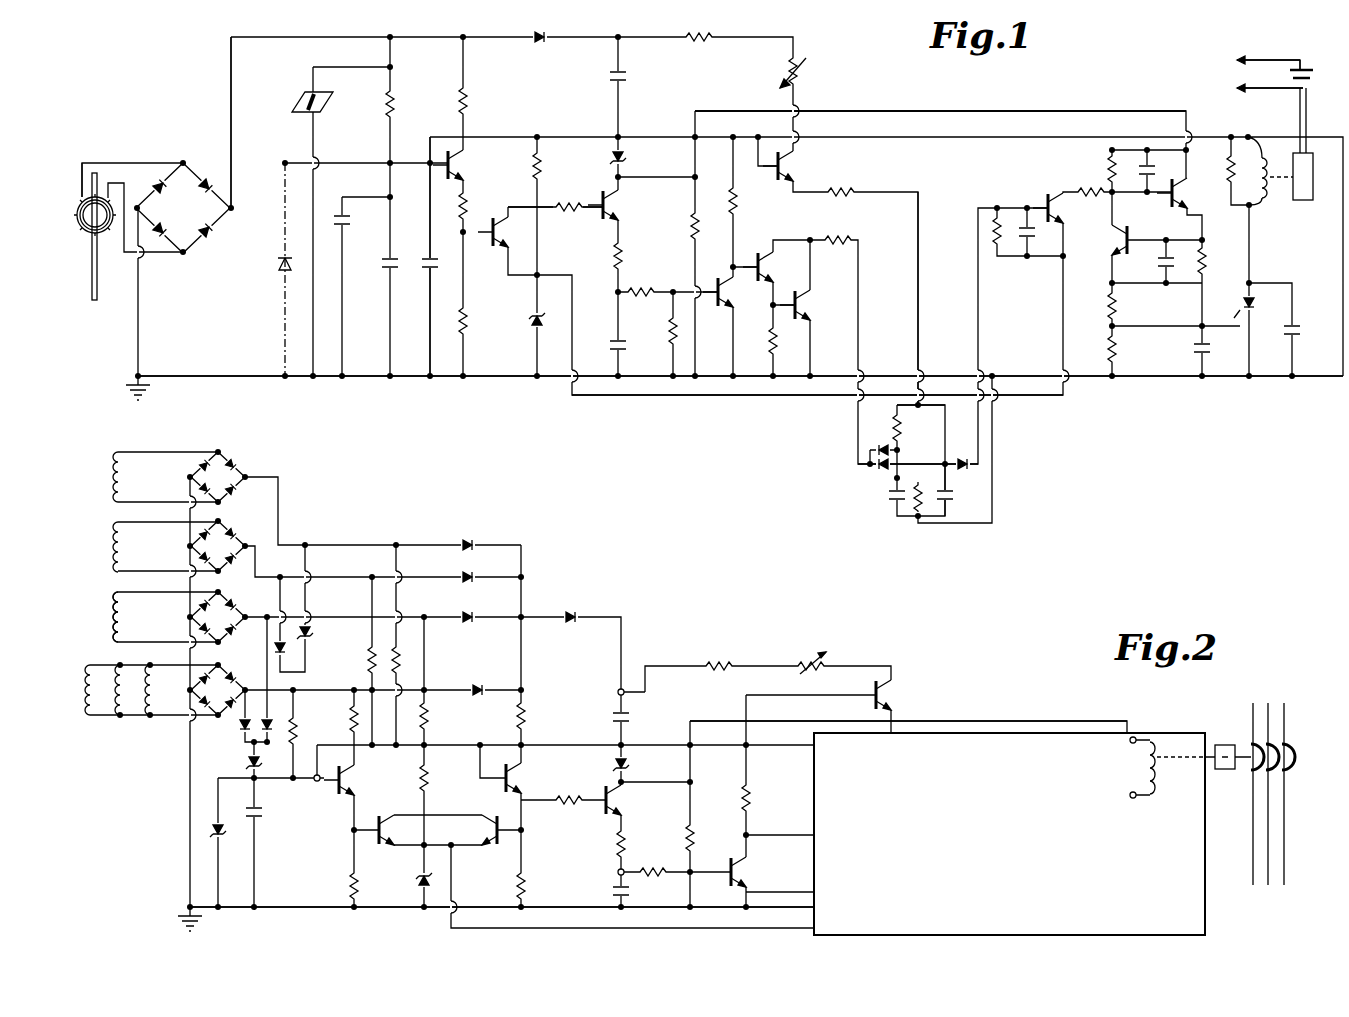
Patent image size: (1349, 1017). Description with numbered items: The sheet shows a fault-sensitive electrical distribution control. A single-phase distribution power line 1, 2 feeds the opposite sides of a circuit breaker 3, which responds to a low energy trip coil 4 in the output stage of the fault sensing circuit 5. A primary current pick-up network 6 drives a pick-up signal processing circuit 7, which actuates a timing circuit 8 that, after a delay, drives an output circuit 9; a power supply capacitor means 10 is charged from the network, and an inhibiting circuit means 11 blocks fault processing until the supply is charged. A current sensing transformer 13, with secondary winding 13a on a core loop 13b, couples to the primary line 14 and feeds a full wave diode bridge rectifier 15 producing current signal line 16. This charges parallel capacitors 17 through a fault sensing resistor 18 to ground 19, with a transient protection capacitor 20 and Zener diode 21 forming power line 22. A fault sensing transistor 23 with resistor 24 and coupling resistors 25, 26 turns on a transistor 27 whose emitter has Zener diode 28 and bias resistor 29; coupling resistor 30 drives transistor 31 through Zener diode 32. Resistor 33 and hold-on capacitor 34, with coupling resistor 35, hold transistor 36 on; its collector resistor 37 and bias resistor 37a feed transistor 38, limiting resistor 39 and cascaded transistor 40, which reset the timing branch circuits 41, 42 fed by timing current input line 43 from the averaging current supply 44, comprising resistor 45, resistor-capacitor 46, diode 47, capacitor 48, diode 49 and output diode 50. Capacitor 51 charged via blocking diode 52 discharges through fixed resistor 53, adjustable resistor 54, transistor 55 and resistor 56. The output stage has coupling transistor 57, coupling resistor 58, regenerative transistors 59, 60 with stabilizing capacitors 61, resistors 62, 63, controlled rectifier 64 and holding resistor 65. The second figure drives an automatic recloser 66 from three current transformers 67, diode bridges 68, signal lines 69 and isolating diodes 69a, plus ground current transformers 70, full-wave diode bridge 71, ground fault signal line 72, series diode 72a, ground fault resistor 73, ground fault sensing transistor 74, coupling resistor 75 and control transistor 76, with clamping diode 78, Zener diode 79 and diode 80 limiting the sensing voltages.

In FIG. 1, the distribution power line 1 is at (1272, 58).
In FIG. 1, the distribution power line 2 is at (1252, 88).
In FIG. 1, the circuit breaker 3 is at (1315, 68).
In FIG. 1, the trip coil 4 is at (1289, 198).
In FIG. 1, the fault sensing circuit 5 is at (1132, 102).
In FIG. 1, the primary current pick-up network 6 is at (165, 140).
In FIG. 1, the pick-up signal processing circuit 7 is at (700, 398).
In FIG. 1, the timing circuit 8 is at (844, 440).
In FIG. 1, the output circuit 9 is at (1154, 378).
In FIG. 1, the power supply capacitor means 10 is at (402, 392).
In FIG. 1, the inhibiting circuit means 11 is at (555, 185).
In FIG. 1, the current sensing transformer 13 is at (75, 192).
In FIG. 1, the secondary winding 13a is at (80, 218).
In FIG. 1, the core loop 13b is at (88, 233).
In FIG. 1, the primary line 14 is at (90, 290).
In FIG. 1, the full wave diode bridge rectifier 15 is at (183, 208).
In FIG. 1, the current signal line 16 is at (230, 106).
In FIG. 1, the capacitors 17 is at (418, 258).
In FIG. 2, the capacitors 17 is at (268, 812).
In FIG. 1, the fault sensing resistor 18 is at (398, 93).
In FIG. 2, the fault sensing resistor 18 is at (398, 700).
In FIG. 1, the ground 19 is at (212, 376).
In FIG. 2, the ground 19 is at (294, 908).
In FIG. 1, the transient protection capacitor 20 is at (350, 223).
In FIG. 1, the Zener diode 21 is at (280, 272).
In FIG. 1, the power line 22 is at (418, 162).
In FIG. 2, the power line 22 is at (385, 746).
In FIG. 1, the fault sensing transistor 23 is at (460, 165).
In FIG. 2, the fault sensing transistor 23 is at (525, 778).
In FIG. 1, the resistor 24 is at (470, 94).
In FIG. 2, the resistor 24 is at (516, 716).
In FIG. 1, the coupling resistor 25 is at (468, 196).
In FIG. 1, the coupling resistor 26 is at (468, 326).
In FIG. 2, the coupling resistor 26 is at (526, 882).
In FIG. 1, the transistor 27 is at (497, 258).
In FIG. 2, the transistor 27 is at (496, 848).
In FIG. 1, the Zener diode 28 is at (540, 328).
In FIG. 2, the Zener diode 28 is at (416, 886).
In FIG. 1, the bias resistor 29 is at (544, 170).
In FIG. 1, the coupling resistor 30 is at (565, 212).
In FIG. 2, the coupling resistor 30 is at (566, 802).
In FIG. 1, the transistor 31 is at (600, 225).
In FIG. 2, the transistor 31 is at (628, 796).
In FIG. 1, the Zener diode 32 is at (626, 156).
In FIG. 2, the Zener diode 32 is at (632, 763).
In FIG. 1, the resistor 33 is at (624, 256).
In FIG. 1, the hold-on capacitor 34 is at (608, 343).
In FIG. 2, the hold-on capacitor 34 is at (632, 892).
In FIG. 1, the coupling resistor 35 is at (644, 290).
In FIG. 1, the transistor 36 is at (724, 312).
In FIG. 2, the transistor 36 is at (748, 864).
In FIG. 1, the resistor 37 is at (738, 198).
In FIG. 1, the bias resistor 37a is at (670, 333).
In FIG. 1, the transistor 38 is at (760, 288).
In FIG. 1, the limiting resistor 39 is at (850, 240).
In FIG. 1, the cascaded transistor 40 is at (802, 326).
In FIG. 1, the branch circuit 41 is at (894, 482).
In FIG. 1, the branch circuit 42 is at (948, 474).
In FIG. 1, the timing current input line 43 is at (918, 405).
In FIG. 1, the averaging current supply 44 is at (935, 89).
In FIG. 2, the averaging current supply 44 is at (908, 703).
In FIG. 1, the resistor 45 is at (900, 432).
In FIG. 1, the paralleled resistor-capacitor 46 is at (928, 492).
In FIG. 1, the diode 47 is at (882, 446).
In FIG. 1, the capacitor 48 is at (948, 496).
In FIG. 1, the diode 49 is at (880, 466).
In FIG. 1, the output diode 50 is at (962, 460).
In FIG. 1, the capacitor 51 is at (608, 76).
In FIG. 2, the capacitor 51 is at (632, 716).
In FIG. 1, the blocking diode 52 is at (540, 45).
In FIG. 2, the blocking diode 52 is at (570, 610).
In FIG. 1, the fixed resistor 53 is at (710, 40).
In FIG. 2, the fixed resistor 53 is at (722, 664).
In FIG. 1, the adjustable resistor 54 is at (803, 62).
In FIG. 2, the adjustable resistor 54 is at (818, 648).
In FIG. 1, the transistor 55 is at (790, 165).
In FIG. 2, the transistor 55 is at (892, 688).
In FIG. 1, the resistor 56 is at (844, 192).
In FIG. 1, the coupling transistor 57 is at (1050, 195).
In FIG. 1, the coupling resistor 58 is at (1086, 186).
In FIG. 1, the transistor 59 is at (1180, 188).
In FIG. 1, the transistor 60 is at (1116, 242).
In FIG. 1, the stabilizing capacitors 61 is at (1152, 174).
In FIG. 1, the resistor 62 is at (1106, 303).
In FIG. 1, the resistor 63 is at (1118, 352).
In FIG. 1, the controlled rectifier 64 is at (1242, 302).
In FIG. 1, the holding resistor 65 is at (1220, 174).
In FIG. 2, the automatic recloser 66 is at (1300, 750).
In FIG. 2, the current transformers 67 is at (112, 617).
In FIG. 2, the diode bridge 68 is at (265, 502).
In FIG. 2, the signal lines 69 is at (354, 580).
In FIG. 2, the isolating diodes 69a is at (462, 614).
In FIG. 2, the current transformers 70 is at (80, 690).
In FIG. 2, the full-wave diode bridge 71 is at (202, 717).
In FIG. 2, the ground fault signal line 72 is at (354, 690).
In FIG. 2, the series diode 72a is at (480, 686).
In FIG. 2, the ground fault resistor 73 is at (298, 728).
In FIG. 2, the ground fault sensing transistor 74 is at (350, 778).
In FIG. 2, the coupling resistor 75 is at (348, 882).
In FIG. 2, the control transistor 76 is at (374, 852).
In FIG. 2, the diode 78 is at (312, 634).
In FIG. 2, the Zener diode 79 is at (246, 762).
In FIG. 2, the diode 80 is at (242, 728).